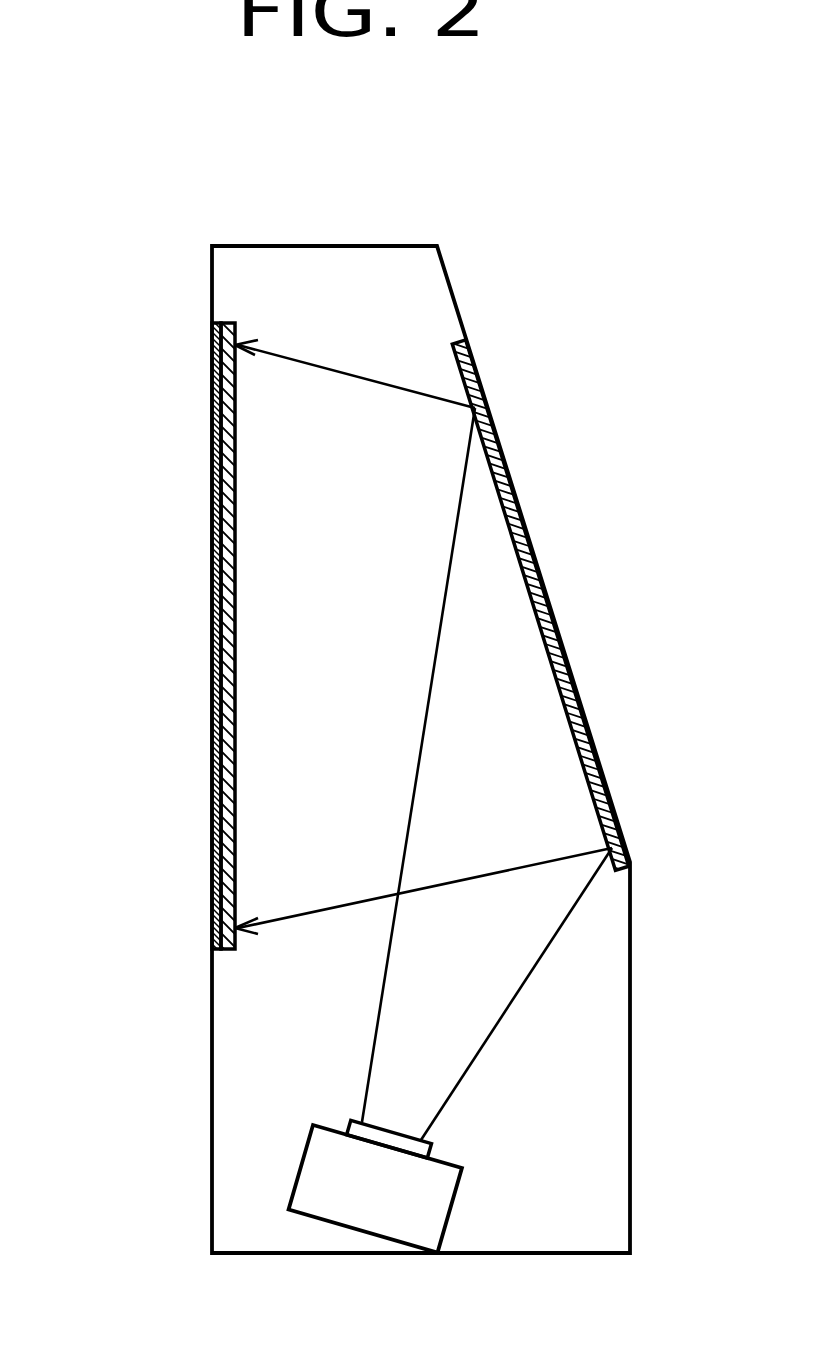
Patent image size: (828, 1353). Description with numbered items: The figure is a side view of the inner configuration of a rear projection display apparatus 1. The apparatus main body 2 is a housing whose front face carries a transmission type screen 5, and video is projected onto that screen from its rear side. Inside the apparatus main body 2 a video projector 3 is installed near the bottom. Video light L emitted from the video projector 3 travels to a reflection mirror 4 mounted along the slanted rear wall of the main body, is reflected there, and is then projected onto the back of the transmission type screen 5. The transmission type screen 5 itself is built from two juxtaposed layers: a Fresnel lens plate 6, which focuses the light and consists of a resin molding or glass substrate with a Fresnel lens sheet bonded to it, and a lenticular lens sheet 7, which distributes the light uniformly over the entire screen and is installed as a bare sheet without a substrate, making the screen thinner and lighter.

The rear projection display apparatus 1 is at (163, 388).
The apparatus main body 2 is at (343, 245).
The video projector 3 is at (362, 1205).
The reflection mirror 4 is at (556, 622).
The transmission type screen 5 is at (212, 663).
The Fresnel lens plate 6 is at (236, 552).
The lenticular lens sheet 7 is at (212, 545).
The video light L is at (508, 1007).